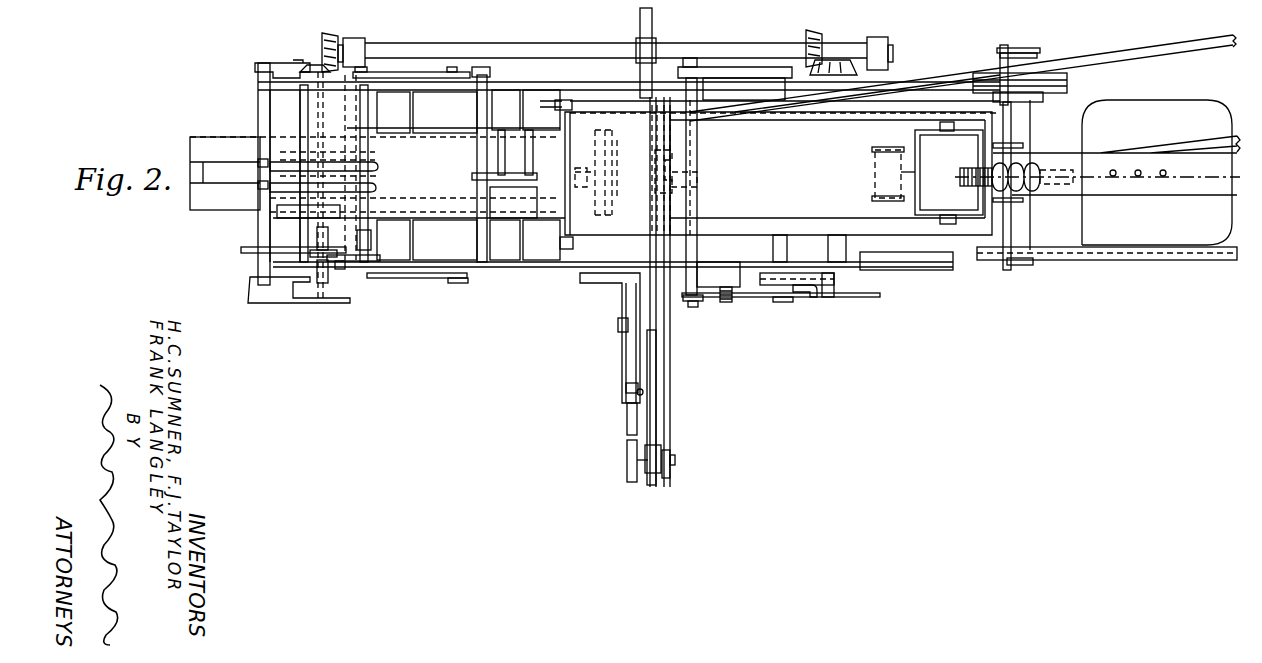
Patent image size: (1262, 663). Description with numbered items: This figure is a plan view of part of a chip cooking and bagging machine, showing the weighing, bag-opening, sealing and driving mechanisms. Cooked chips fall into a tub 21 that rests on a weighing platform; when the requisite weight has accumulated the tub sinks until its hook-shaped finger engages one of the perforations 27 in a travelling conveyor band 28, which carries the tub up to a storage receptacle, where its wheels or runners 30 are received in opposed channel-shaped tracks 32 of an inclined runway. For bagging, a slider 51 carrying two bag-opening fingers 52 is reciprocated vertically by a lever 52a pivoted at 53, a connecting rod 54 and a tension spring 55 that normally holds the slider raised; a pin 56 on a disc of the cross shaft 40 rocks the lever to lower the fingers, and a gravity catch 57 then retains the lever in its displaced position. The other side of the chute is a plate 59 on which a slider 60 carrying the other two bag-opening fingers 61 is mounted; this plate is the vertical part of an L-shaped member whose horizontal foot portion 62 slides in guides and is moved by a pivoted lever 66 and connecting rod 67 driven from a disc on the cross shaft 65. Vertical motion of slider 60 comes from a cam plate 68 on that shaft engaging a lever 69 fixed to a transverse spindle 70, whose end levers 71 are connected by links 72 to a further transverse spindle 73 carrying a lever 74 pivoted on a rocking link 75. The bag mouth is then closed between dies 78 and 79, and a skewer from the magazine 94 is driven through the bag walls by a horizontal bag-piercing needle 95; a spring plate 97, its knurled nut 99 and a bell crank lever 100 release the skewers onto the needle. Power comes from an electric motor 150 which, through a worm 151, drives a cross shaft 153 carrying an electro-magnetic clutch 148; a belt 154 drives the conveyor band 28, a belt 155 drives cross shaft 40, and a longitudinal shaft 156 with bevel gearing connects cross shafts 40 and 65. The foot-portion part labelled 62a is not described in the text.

The tub 21 is at (905, 251).
The perforations 27 is at (1138, 200).
The conveyor band 28 is at (1116, 176).
The wheels or runners 30 is at (927, 173).
The channel-shaped tracks 32 is at (778, 213).
The cross shaft 40 is at (827, 302).
The slider 51 is at (728, 122).
The bag-opening fingers 52 is at (704, 103).
The lever 52a is at (781, 317).
The pivot 53 is at (787, 319).
The connecting rod 54 is at (702, 210).
The tension spring 55 is at (720, 314).
The pin 56 is at (843, 307).
The gravity catch 57 is at (812, 313).
The plate 59 is at (619, 165).
The slider 60 is at (580, 162).
The bag-opening fingers 61 is at (626, 170).
The horizontal or foot portion 62 is at (440, 176).
The block 62a is at (428, 174).
The cross shaft 65 is at (250, 176).
The pivoted lever 66 is at (276, 171).
The connecting rod 67 is at (296, 198).
The cam plate 68 is at (277, 262).
The lever 69 is at (354, 288).
The transverse spindle 70 is at (382, 240).
The levers 71 is at (411, 164).
The links 72 is at (417, 164).
The transverse spindle 73 is at (501, 240).
The lever 74 is at (504, 132).
The rocking link 75 is at (541, 132).
The die 78 is at (541, 226).
The die 79 is at (558, 273).
The magazine 94 is at (605, 338).
The bag-piercing needle 95 is at (629, 442).
The spring plate 97 is at (622, 246).
The knurled nut 99 is at (678, 407).
The bell crank lever 100 is at (605, 385).
The electro-magnetic clutch 148 is at (1050, 75).
The electric motor 150 is at (1157, 156).
The worm 151 is at (1020, 193).
The cross shaft 153 is at (1011, 205).
The belt 154 is at (1107, 271).
The belt 155 is at (963, 78).
The longitudinal shaft 156 is at (615, 38).